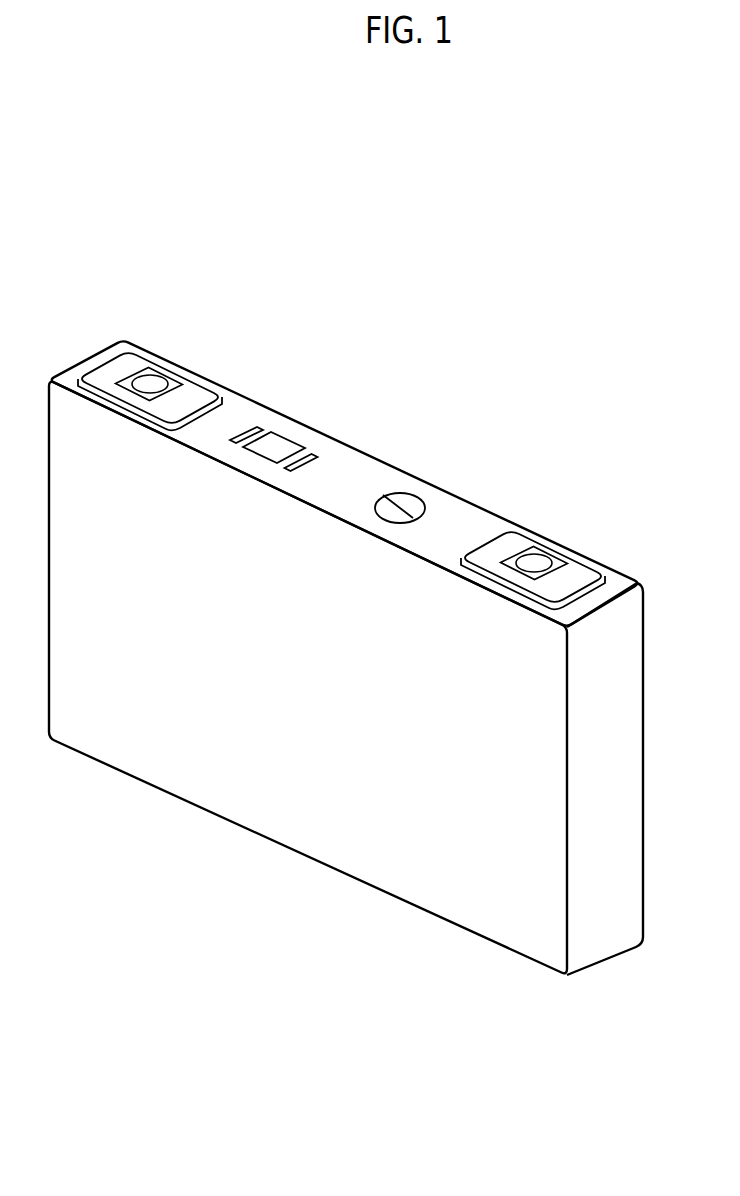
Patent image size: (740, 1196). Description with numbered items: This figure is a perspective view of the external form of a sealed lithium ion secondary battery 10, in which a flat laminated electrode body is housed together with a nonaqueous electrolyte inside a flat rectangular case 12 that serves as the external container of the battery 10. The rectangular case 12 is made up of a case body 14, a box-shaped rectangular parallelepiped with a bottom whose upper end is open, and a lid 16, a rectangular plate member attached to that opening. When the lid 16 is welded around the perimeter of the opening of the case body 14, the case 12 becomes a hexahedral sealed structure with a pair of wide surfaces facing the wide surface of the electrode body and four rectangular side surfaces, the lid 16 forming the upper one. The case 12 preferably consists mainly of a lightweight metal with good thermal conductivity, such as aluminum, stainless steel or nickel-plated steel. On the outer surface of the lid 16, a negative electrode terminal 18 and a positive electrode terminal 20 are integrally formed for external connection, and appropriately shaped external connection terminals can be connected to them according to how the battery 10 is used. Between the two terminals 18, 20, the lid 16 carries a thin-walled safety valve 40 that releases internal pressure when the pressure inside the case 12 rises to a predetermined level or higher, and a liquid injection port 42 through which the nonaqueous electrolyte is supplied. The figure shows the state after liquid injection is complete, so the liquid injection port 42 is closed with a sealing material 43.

The lithium ion battery 10 is at (629, 322).
The rectangular case 12 is at (380, 810).
The case body 14 is at (240, 797).
The lid 16 is at (358, 458).
The negative electrode terminal 18 is at (153, 381).
The positive electrode terminal 20 is at (540, 560).
The safety valve 40 is at (416, 508).
The liquid injection port 42 is at (290, 448).
The sealing material 43 is at (274, 445).